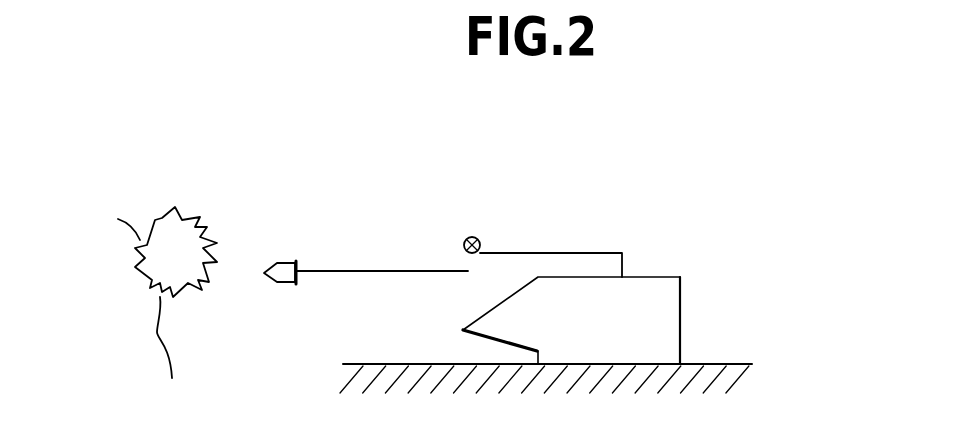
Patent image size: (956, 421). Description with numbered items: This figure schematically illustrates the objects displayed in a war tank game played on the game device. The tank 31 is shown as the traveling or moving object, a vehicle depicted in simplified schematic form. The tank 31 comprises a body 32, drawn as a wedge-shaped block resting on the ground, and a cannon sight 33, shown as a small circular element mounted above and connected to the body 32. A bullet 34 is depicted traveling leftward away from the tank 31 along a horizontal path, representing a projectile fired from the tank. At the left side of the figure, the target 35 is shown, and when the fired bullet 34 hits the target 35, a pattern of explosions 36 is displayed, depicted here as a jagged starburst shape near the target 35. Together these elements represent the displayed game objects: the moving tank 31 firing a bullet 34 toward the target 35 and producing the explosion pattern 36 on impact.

The tank 31 is at (714, 306).
The body 32 is at (650, 287).
The cannon sight 33 is at (473, 237).
The bullet 34 is at (288, 242).
The target 35 is at (128, 292).
The pattern of explosions 36 is at (192, 202).